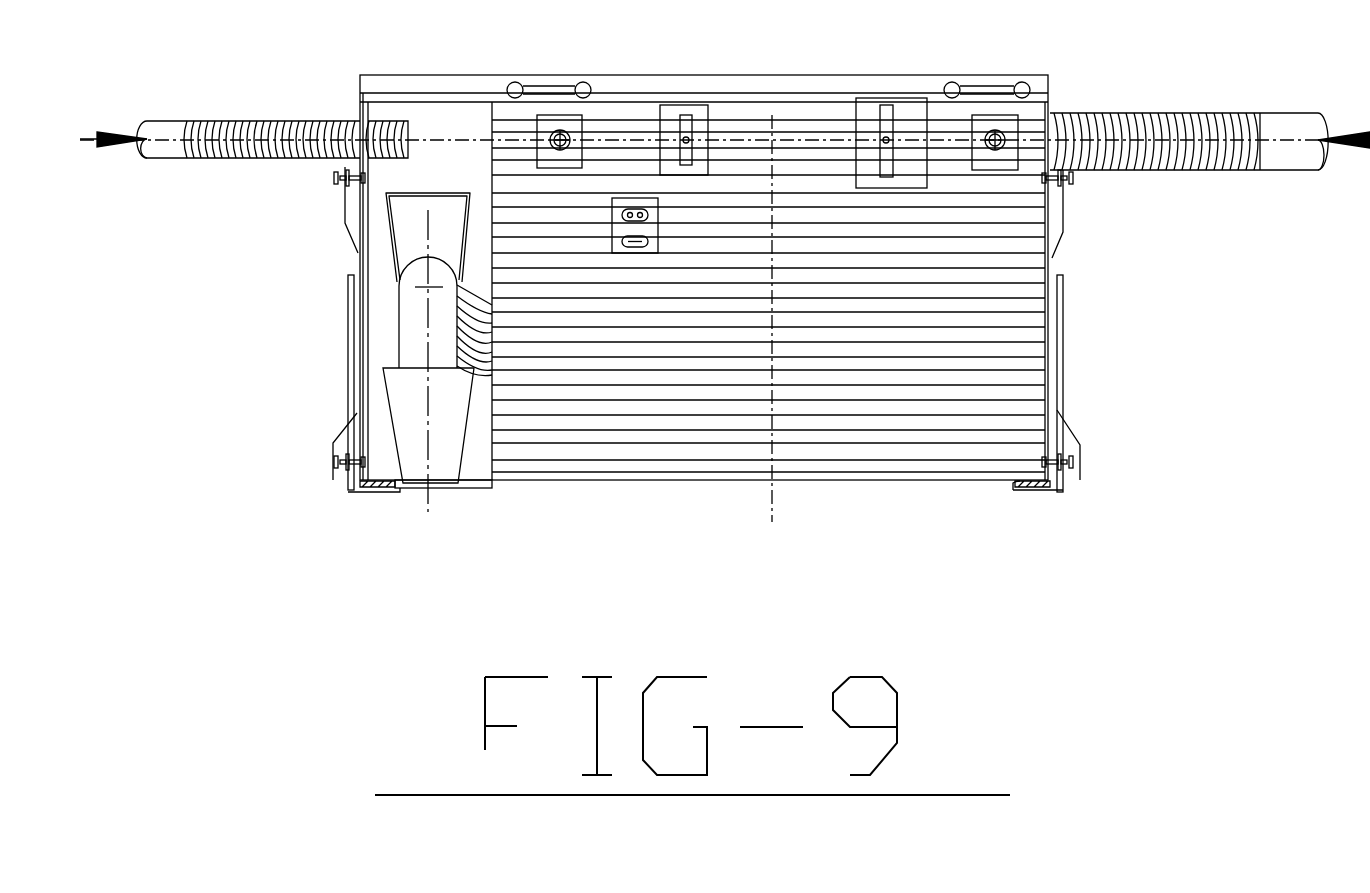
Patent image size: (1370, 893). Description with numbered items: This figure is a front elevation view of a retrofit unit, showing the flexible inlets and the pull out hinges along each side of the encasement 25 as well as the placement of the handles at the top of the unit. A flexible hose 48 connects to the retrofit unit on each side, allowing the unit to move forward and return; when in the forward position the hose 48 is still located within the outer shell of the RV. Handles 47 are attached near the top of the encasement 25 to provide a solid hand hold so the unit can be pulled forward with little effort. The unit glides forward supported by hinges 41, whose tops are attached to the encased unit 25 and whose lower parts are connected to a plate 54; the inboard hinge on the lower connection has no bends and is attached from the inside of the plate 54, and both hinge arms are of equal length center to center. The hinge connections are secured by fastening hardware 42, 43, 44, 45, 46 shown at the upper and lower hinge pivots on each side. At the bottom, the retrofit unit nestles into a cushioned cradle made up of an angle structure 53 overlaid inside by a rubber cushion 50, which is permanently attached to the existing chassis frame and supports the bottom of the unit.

The encasement 25 is at (856, 480).
The hinge 41 is at (340, 430).
The bolt 42 is at (334, 178).
The washer 43 is at (707, 322).
The spacer 44 is at (706, 322).
The lock washer 45 is at (706, 322).
The nut 46 is at (706, 322).
The handle 47 is at (537, 84).
The flexible hose 48 is at (288, 118).
The rubber cushion 50 is at (385, 490).
The angle structure 53 is at (365, 490).
The plate 54 is at (350, 318).